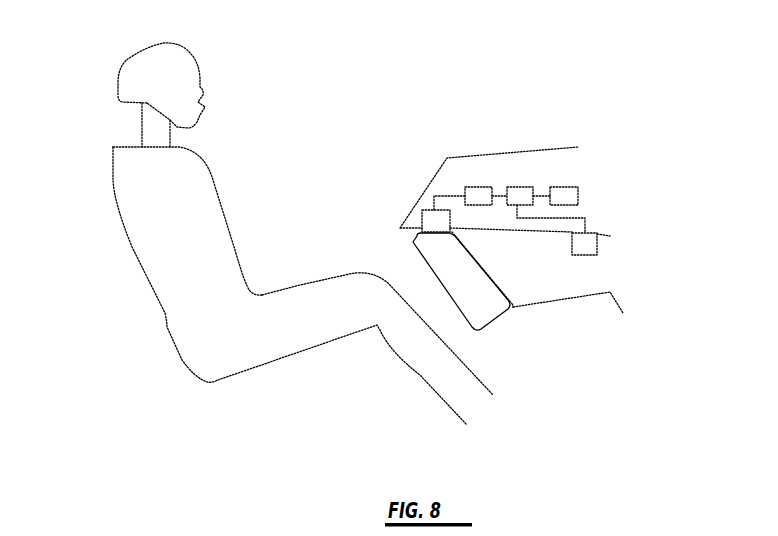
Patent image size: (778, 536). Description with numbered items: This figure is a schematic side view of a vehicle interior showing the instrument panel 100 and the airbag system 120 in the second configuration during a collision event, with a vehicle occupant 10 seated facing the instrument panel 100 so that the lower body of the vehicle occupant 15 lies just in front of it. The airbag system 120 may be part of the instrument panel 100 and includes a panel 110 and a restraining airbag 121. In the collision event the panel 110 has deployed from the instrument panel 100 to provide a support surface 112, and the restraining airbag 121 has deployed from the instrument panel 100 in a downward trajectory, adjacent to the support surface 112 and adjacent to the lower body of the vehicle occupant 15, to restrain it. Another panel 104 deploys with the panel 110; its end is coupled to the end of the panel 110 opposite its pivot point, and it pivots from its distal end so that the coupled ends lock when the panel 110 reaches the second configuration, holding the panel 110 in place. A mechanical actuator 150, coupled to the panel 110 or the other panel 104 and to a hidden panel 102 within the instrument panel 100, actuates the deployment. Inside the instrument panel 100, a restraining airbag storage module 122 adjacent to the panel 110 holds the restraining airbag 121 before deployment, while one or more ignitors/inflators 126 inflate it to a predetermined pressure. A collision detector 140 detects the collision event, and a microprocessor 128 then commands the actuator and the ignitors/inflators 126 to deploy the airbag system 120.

The vehicle occupant 10 is at (303, 238).
The lower body of the vehicle occupant 15 is at (368, 305).
The instrument panel 100 is at (507, 158).
The hidden panel 102 is at (605, 232).
The other panel 104 is at (572, 298).
The panel 110 is at (513, 297).
The support surface 112 is at (498, 292).
The airbag system 120 is at (478, 185).
The restraining airbag 121 is at (358, 225).
The restraining airbag storage module 122 is at (420, 218).
The ignitors/inflators 126 is at (465, 187).
The microprocessor 128 is at (524, 191).
The collision detector 140 is at (578, 186).
The mechanical actuator 150 is at (588, 247).